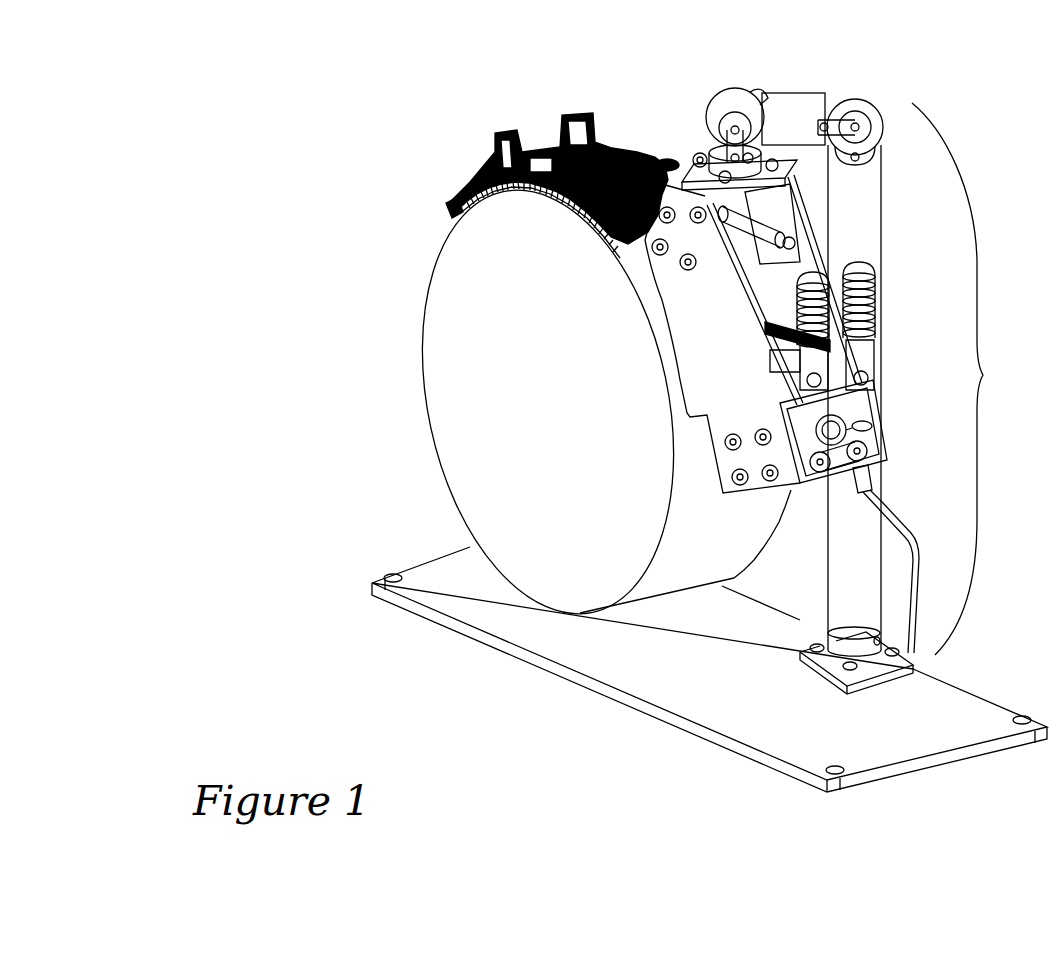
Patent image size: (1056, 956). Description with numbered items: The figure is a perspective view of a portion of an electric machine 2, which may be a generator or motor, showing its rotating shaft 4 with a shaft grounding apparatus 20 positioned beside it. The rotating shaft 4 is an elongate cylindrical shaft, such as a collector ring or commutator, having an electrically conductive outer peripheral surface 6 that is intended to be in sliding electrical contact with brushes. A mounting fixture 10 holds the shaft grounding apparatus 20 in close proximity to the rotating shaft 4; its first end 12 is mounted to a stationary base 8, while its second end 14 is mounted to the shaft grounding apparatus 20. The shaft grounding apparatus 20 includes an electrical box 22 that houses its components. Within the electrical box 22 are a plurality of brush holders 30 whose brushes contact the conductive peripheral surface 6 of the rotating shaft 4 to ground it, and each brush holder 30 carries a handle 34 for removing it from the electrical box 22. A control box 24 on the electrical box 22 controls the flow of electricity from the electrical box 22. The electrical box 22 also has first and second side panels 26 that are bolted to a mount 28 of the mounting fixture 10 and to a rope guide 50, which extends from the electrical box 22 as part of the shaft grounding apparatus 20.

The electric machine 2 is at (378, 135).
The rotating shaft 4 is at (447, 315).
The electrically conductive outer peripheral surface 6 is at (695, 540).
The base 8 is at (930, 738).
The mounting fixture 10 is at (967, 379).
The first end 12 is at (920, 652).
The second end 14 is at (680, 146).
The shaft grounding apparatus 20 is at (838, 201).
The electrical box 22 is at (742, 371).
The control box 24 is at (862, 481).
The side panels 26 is at (710, 335).
The mount 28 is at (835, 95).
The brush holders 30 is at (865, 360).
The handle 34 is at (866, 285).
The rope guide 50 is at (528, 106).